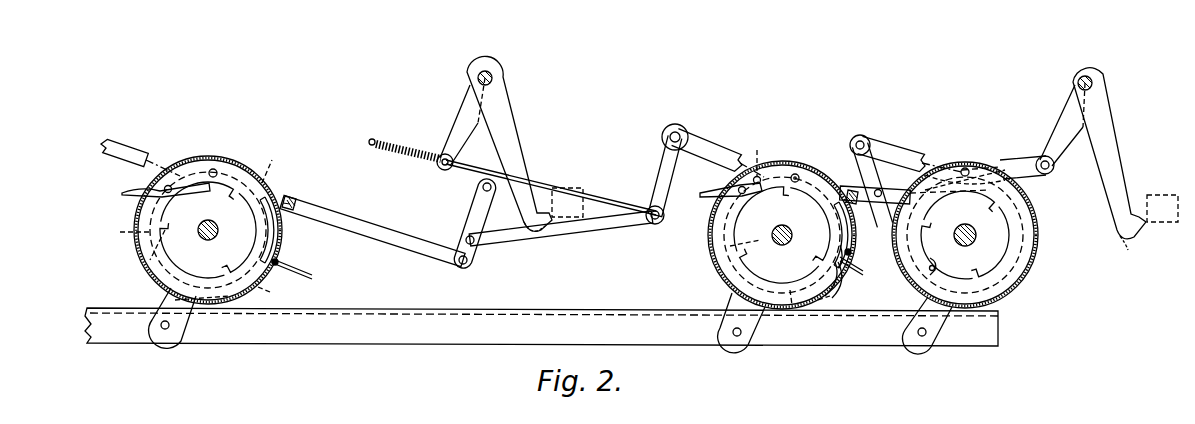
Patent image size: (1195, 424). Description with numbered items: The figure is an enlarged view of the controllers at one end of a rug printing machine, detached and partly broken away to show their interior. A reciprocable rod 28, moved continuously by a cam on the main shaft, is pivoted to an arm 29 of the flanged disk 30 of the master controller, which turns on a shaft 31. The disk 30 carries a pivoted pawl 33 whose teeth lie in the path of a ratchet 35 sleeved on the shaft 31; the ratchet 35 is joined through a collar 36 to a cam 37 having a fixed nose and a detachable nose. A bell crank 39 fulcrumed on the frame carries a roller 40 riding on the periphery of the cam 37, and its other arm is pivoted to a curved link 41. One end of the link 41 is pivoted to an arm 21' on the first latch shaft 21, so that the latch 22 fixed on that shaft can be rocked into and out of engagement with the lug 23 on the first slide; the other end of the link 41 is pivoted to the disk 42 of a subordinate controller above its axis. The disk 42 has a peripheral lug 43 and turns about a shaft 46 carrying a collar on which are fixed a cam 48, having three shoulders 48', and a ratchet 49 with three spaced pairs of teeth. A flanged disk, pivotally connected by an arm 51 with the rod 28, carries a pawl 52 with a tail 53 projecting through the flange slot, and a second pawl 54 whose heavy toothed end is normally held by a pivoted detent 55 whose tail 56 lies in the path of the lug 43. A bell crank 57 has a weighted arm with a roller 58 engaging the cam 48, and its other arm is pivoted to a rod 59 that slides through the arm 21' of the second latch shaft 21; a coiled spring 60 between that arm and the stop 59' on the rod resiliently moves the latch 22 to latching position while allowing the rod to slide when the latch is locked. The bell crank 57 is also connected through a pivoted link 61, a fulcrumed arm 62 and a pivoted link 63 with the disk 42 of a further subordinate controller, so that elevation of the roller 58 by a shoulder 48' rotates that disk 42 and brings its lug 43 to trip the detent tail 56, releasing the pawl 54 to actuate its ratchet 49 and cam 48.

The shaft 21 is at (806, 147).
The arm 21' is at (750, 122).
The latch 22 is at (537, 238).
The lug 23 is at (580, 188).
The reciprocable rod 28 is at (806, 338).
The arm 29 is at (922, 303).
The flanged disk 30 is at (1030, 278).
The shaft 31 is at (978, 237).
The pawl 33 is at (856, 252).
The ratchet 35 is at (993, 265).
The collar 36 is at (861, 272).
The cam 37 is at (1035, 207).
The bell crank 39 is at (908, 152).
The roller 40 is at (968, 168).
The curved link 41 is at (848, 175).
The disk 42 is at (150, 270).
The peripheral lug 43 is at (292, 196).
The shaft 46 is at (770, 240).
The cam 48 is at (495, 256).
The shoulder 48' is at (466, 229).
The ratchet 49 is at (170, 236).
The arm 51 is at (152, 328).
The pawl 52 is at (752, 152).
The tail 53 is at (133, 205).
The pawl 54 is at (290, 238).
The detent 55 is at (842, 290).
The tail 56 is at (305, 272).
The bell crank 57 is at (150, 156).
The roller 58 is at (218, 168).
The rod 59 is at (551, 187).
The stop 59' is at (389, 143).
The coiled spring 60 is at (406, 162).
The pivoted link 61 is at (612, 222).
The fulcrumed arm 62 is at (475, 212).
The pivoted link 63 is at (378, 224).